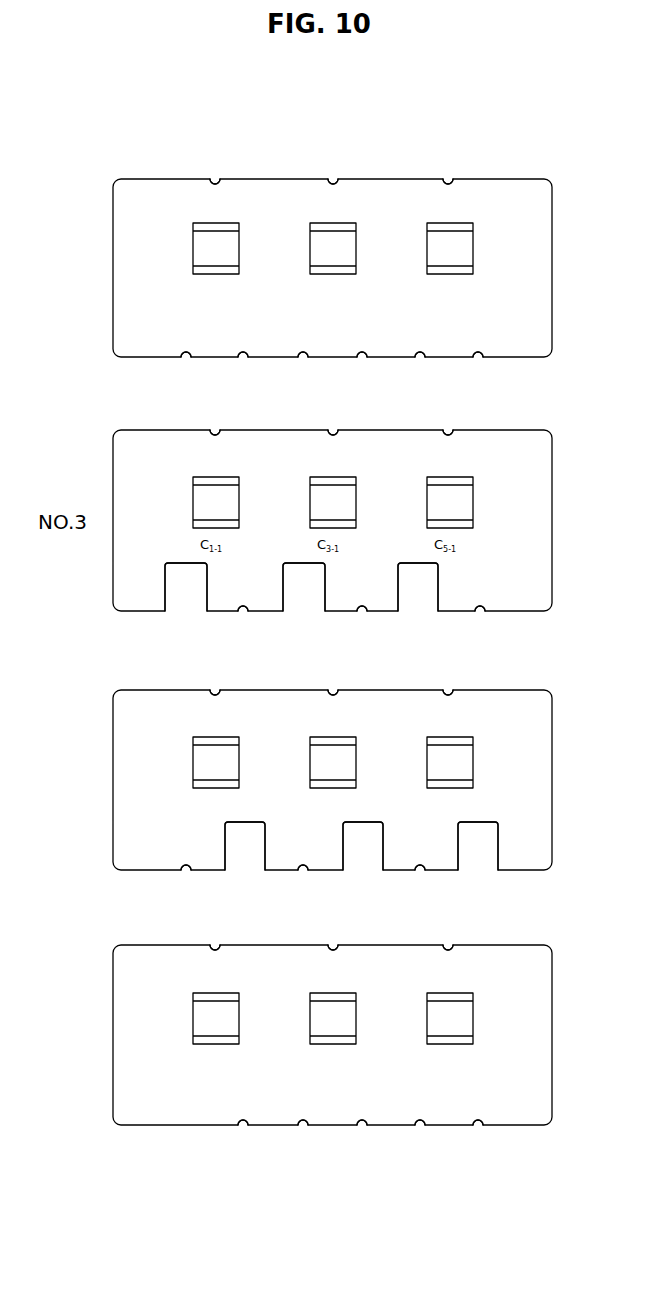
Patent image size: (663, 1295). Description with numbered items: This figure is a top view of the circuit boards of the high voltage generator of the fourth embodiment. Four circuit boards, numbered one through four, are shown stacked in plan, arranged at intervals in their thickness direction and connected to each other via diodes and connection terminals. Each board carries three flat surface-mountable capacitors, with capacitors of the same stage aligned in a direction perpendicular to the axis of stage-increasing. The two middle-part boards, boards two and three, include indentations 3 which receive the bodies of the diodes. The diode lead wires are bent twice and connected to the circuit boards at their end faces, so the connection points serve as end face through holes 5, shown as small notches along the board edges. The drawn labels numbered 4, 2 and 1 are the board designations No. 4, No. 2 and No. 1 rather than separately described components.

The end face through hole 5 is at (448, 179).
The indentation 3 is at (478, 905).
The capacitor block NO. 4 is at (295, 268).
The capacitor block NO. 2 is at (295, 780).
The capacitor block NO. 1 is at (295, 1035).